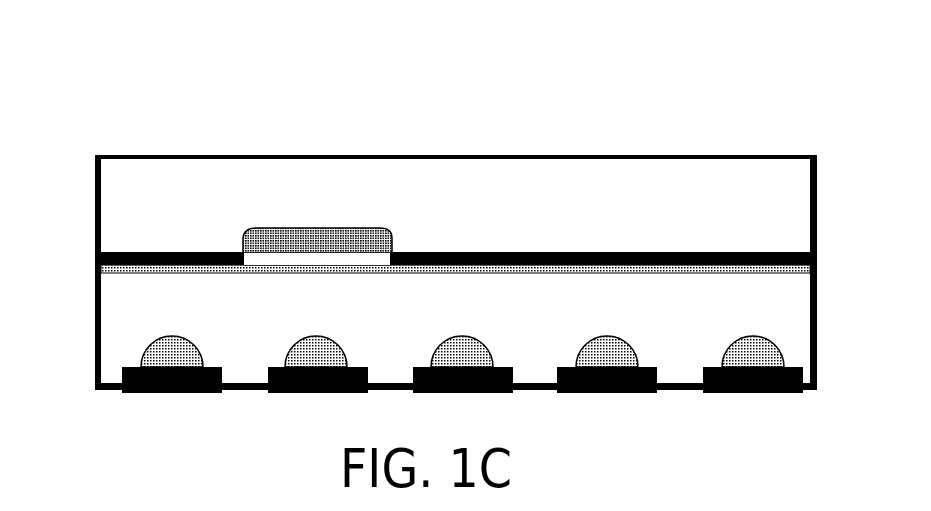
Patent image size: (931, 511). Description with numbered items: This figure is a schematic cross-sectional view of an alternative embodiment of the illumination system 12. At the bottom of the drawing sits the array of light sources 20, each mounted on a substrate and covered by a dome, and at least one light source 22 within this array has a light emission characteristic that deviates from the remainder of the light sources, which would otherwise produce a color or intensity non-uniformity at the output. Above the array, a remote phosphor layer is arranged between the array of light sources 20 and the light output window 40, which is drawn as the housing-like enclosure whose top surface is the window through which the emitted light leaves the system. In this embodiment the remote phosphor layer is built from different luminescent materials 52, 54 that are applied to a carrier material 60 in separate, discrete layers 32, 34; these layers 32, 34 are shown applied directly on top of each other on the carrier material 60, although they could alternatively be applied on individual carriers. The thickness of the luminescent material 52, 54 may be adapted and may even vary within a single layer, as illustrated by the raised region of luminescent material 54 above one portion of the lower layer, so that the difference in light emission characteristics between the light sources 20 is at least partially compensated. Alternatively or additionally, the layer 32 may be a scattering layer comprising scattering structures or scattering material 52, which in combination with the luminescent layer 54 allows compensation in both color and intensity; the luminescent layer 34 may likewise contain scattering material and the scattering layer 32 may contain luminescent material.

The illumination system 12 is at (207, 143).
The array of light sources 20 is at (88, 337).
The light source 22 is at (286, 342).
The layer of luminescent material 32 is at (96, 263).
The layer of luminescent material 34 is at (96, 250).
The light output window 40 is at (127, 150).
The luminescent material 52 is at (183, 252).
The luminescent material 54 is at (300, 238).
The carrier material 60 is at (533, 275).